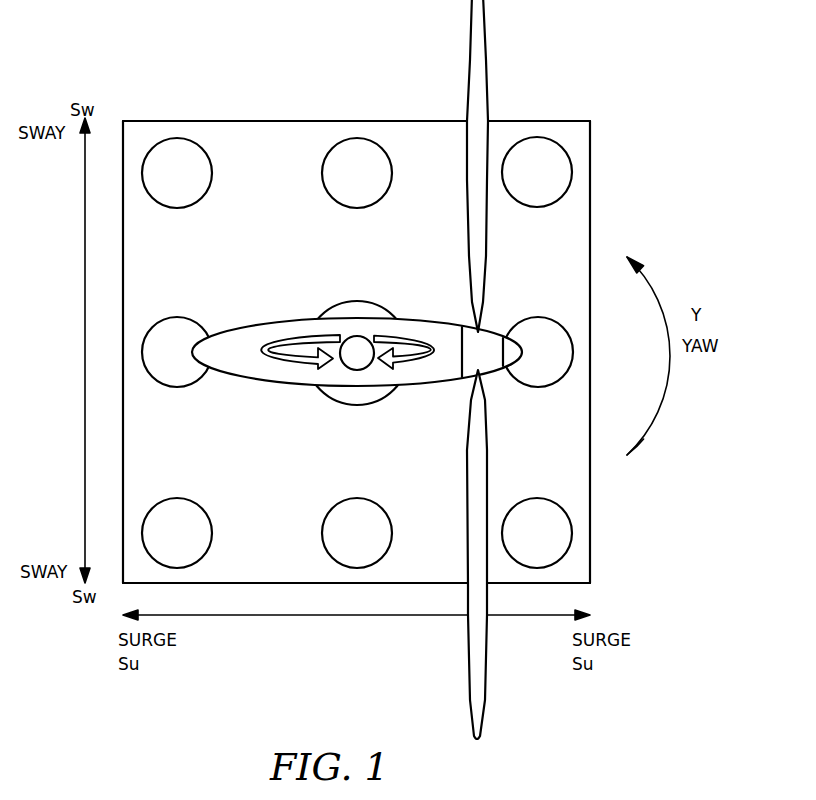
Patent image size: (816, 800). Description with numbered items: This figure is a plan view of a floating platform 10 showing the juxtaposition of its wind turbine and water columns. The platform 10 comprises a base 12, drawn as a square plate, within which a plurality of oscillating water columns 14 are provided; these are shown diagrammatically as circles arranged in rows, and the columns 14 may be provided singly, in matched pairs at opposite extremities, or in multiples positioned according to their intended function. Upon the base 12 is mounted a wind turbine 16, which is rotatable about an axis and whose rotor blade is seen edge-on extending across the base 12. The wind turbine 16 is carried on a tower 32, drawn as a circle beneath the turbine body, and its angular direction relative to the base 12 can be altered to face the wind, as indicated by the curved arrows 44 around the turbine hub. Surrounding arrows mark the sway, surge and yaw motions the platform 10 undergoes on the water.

The platform 10 is at (177, 105).
The base 12 is at (140, 438).
The oscillating water columns 14 is at (205, 173).
The wind turbine 16 is at (415, 365).
The tower 32 is at (357, 300).
The rotation direction arrows 44 is at (303, 363).